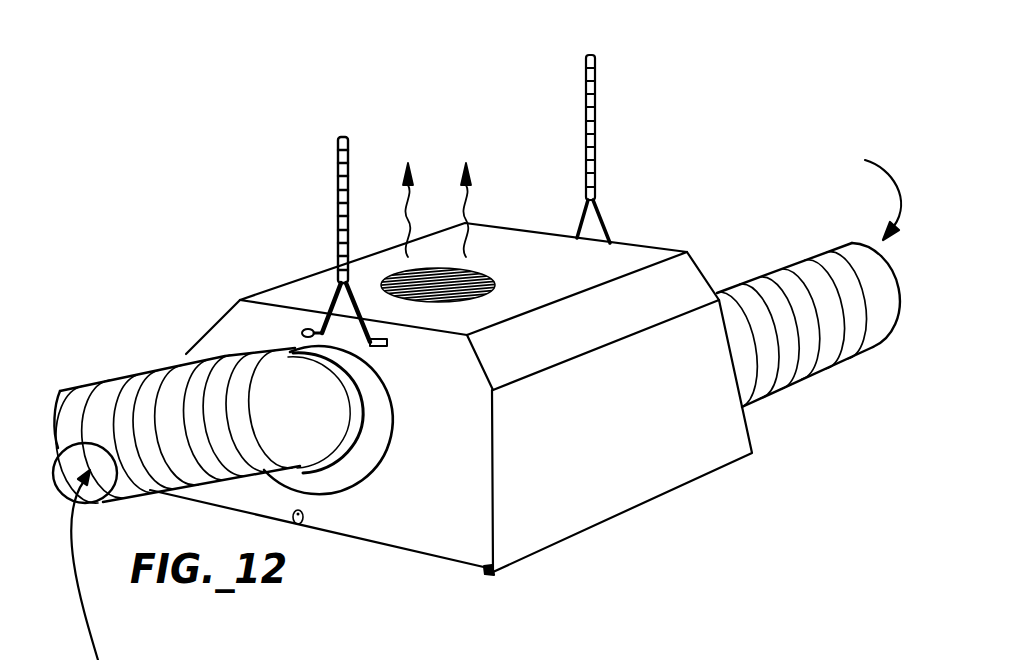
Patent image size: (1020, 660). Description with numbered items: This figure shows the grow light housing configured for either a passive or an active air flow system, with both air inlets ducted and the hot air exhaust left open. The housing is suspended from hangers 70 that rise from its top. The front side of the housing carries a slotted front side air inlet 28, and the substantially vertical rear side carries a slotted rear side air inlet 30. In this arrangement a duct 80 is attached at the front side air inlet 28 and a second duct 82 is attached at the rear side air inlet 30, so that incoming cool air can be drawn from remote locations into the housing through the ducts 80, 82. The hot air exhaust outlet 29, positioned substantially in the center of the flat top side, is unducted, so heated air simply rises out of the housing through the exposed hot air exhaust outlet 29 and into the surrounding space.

The front side air inlet 28 is at (393, 443).
The hot air exhaust outlet 29 is at (498, 288).
The rear side air inlet 30 is at (745, 416).
The hangers 70 is at (330, 303).
The duct 80 is at (158, 368).
The duct 82 is at (798, 265).